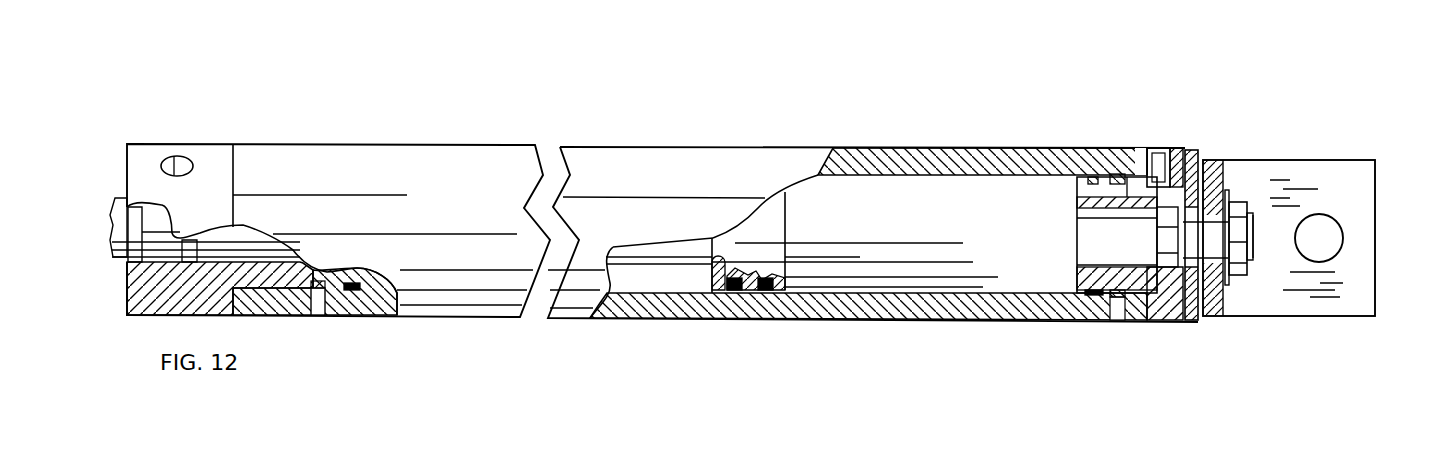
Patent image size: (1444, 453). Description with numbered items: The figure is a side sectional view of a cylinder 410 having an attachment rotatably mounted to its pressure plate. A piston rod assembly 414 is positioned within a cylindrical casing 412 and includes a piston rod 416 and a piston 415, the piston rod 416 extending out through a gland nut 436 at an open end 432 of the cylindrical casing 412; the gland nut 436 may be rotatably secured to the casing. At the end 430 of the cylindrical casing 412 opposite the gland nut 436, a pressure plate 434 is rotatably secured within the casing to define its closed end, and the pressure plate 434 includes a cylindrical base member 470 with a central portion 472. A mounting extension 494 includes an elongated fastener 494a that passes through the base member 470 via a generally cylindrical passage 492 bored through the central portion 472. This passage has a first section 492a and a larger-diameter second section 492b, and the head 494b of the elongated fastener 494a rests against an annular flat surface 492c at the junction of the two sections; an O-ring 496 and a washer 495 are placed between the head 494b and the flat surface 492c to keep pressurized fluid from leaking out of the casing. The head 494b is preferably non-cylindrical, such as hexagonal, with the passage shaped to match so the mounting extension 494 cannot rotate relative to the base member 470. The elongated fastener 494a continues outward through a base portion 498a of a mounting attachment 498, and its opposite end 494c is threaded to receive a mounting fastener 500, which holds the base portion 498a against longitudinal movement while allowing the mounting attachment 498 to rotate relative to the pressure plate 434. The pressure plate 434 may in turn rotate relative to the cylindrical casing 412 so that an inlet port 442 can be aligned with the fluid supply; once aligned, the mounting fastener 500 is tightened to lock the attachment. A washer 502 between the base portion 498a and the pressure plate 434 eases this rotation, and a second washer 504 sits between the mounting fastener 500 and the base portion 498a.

The cylinder 410 is at (676, 87).
The cylindrical casing 412 is at (885, 152).
The piston rod assembly 414 is at (703, 272).
The piston 415 is at (790, 253).
The piston rod 416 is at (637, 258).
The end 430 is at (1143, 148).
The open end 432 is at (233, 143).
The pressure plate 434 is at (1158, 150).
The gland nut 436 is at (212, 152).
The inlet port 442 is at (1176, 148).
The cylindrical base member 470 is at (1117, 242).
The central portion 472 is at (1080, 263).
The cylindrical passage 492 is at (1080, 252).
The first section 492a is at (1192, 300).
The second section 492b is at (1165, 300).
The annular flat surface 492c is at (1178, 322).
The mounting extension 494 is at (1263, 222).
The elongated fastener 494a is at (1219, 162).
The head 494b is at (1082, 203).
The end 494c is at (1253, 210).
The washer 495 is at (1150, 213).
The O-ring 496 is at (1150, 243).
The mounting attachment 498 is at (1313, 210).
The base portion 498a is at (1213, 160).
The mounting fastener 500 is at (1240, 207).
The washer 502 is at (1199, 160).
The second washer 504 is at (1227, 277).